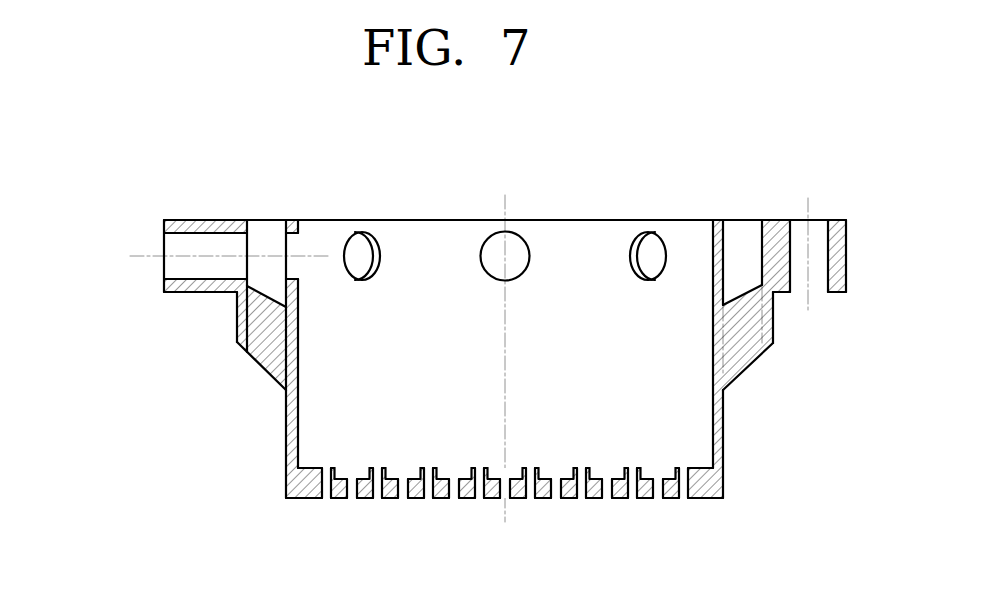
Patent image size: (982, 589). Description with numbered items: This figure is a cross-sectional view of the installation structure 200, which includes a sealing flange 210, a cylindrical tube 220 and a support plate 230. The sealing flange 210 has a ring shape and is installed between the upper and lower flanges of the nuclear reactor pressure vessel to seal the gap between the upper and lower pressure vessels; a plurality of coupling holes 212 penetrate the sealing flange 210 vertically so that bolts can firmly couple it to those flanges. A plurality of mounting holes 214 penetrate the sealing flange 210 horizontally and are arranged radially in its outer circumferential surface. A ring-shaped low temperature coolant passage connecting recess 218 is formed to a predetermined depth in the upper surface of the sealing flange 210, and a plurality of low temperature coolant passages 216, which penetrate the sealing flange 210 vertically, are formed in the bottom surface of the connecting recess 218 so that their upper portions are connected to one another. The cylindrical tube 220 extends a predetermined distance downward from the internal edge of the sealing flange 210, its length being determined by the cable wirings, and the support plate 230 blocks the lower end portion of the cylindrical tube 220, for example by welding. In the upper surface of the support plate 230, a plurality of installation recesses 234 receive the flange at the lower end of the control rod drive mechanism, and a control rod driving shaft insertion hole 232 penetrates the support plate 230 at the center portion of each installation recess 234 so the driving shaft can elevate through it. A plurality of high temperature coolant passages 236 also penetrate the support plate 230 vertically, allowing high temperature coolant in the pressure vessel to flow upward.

The installation structure 200 is at (236, 205).
The sealing flange 210 is at (184, 219).
The coupling hole 212 is at (817, 240).
The mounting hole 214 is at (190, 279).
The low temperature coolant passage 216 is at (267, 352).
The low temperature coolant passage connecting recess 218 is at (268, 233).
The cylindrical tube 220 is at (286, 433).
The support plate 230 is at (438, 498).
The control rod driving shaft insertion hole 232 is at (608, 499).
The installation recess 234 is at (608, 470).
The high temperature coolant passage 236 is at (375, 498).